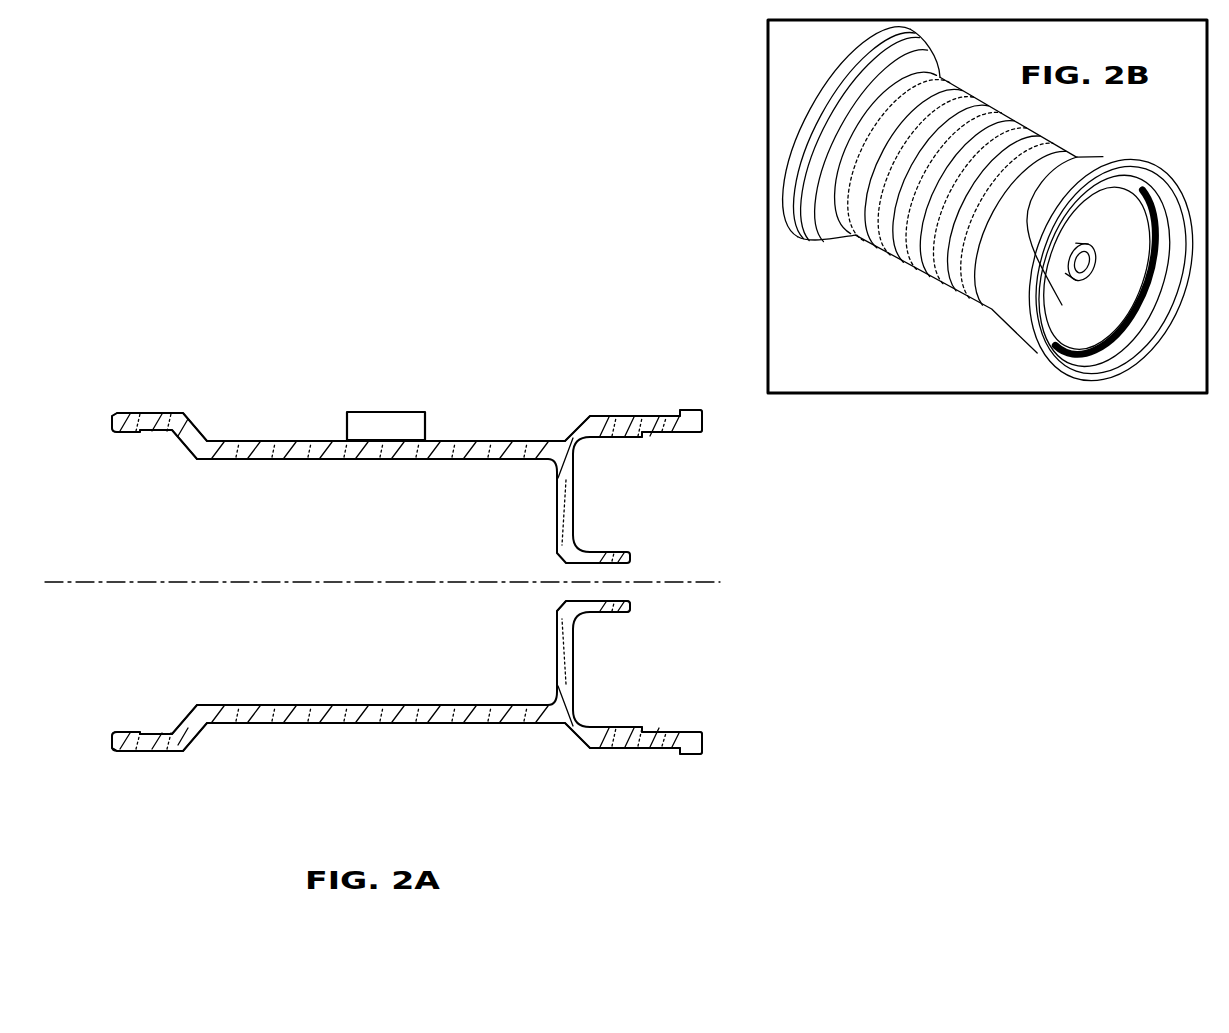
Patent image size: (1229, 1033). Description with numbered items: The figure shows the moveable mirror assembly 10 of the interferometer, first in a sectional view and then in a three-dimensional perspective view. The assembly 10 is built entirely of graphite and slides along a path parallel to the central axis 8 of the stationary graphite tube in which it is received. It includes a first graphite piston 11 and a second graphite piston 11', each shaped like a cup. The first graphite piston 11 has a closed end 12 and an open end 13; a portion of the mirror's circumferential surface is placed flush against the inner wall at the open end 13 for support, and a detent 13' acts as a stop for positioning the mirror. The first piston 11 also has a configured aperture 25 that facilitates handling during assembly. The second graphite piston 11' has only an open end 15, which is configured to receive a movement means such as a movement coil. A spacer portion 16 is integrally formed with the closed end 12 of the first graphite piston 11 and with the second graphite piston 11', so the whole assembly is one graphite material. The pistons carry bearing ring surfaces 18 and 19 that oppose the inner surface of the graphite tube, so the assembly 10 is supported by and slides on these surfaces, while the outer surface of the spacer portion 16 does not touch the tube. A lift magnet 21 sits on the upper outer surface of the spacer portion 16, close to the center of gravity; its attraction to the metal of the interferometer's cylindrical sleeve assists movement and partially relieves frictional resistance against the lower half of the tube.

In FIG. 2A, the central axis 8 is at (490, 577).
In FIG. 2A, the moveable mirror assembly 10 is at (290, 248).
In FIG. 2B, the moveable mirror assembly 10 is at (920, 290).
In FIG. 2A, the first graphite piston 11 is at (620, 585).
In FIG. 2B, the first graphite piston 11 is at (1020, 266).
In FIG. 2A, the second graphite piston 11' is at (173, 552).
In FIG. 2B, the second graphite piston 11' is at (867, 160).
In FIG. 2A, the closed end 12 is at (548, 527).
In FIG. 2A, the open end 13 is at (698, 742).
In FIG. 2A, the detent 13' is at (652, 582).
In FIG. 2A, the open end 15 is at (106, 738).
In FIG. 2A, the spacer portion 16 is at (232, 438).
In FIG. 2B, the spacer portion 16 is at (957, 191).
In FIG. 2A, the bearing ring surface 18 is at (690, 408).
In FIG. 2B, the bearing ring surface 18 is at (1148, 180).
In FIG. 2A, the bearing ring surface 19 is at (122, 404).
In FIG. 2B, the bearing ring surface 19 is at (846, 47).
In FIG. 2A, the lift magnet 21 is at (378, 410).
In FIG. 2A, the configured aperture 25 is at (532, 596).
In FIG. 2B, the configured aperture 25 is at (1086, 262).